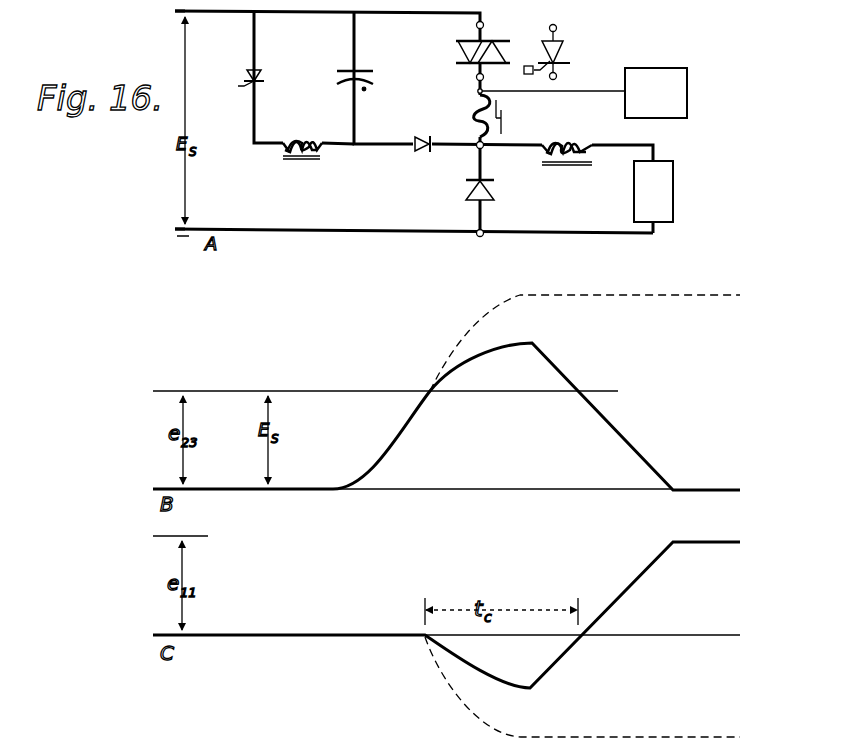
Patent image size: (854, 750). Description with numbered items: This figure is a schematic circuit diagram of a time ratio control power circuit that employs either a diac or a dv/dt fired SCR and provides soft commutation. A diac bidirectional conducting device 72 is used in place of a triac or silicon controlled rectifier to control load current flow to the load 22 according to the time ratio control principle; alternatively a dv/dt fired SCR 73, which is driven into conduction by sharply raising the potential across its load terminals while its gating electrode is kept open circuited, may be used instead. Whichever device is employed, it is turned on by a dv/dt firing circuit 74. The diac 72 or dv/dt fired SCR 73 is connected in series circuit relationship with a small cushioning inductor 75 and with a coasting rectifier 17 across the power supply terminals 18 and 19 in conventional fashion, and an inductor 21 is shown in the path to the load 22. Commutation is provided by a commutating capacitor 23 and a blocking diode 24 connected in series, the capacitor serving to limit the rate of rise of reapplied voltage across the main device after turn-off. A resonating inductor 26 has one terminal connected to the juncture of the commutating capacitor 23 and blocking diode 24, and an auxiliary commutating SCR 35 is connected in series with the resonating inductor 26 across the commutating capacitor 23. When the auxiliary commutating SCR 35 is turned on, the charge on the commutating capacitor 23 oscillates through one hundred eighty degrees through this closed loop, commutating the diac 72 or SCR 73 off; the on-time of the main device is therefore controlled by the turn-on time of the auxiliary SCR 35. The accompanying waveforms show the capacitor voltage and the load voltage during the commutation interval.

The power supply terminal 18 is at (175, 15).
The power supply terminal 19 is at (175, 226).
The auxiliary commutating SCR 35 is at (252, 73).
The commutating capacitor 23 is at (366, 66).
The resonating inductor 26 is at (302, 138).
The blocking diode 24 is at (420, 152).
The diac bidirectional conducting device 72 is at (460, 41).
The dv/dt fired SCR 73 is at (562, 47).
The dv/dt firing circuit 74 is at (659, 68).
The cushioning inductor 75 is at (478, 111).
The inductor 21 is at (559, 140).
The coasting rectifier 17 is at (494, 196).
The load 22 is at (673, 174).